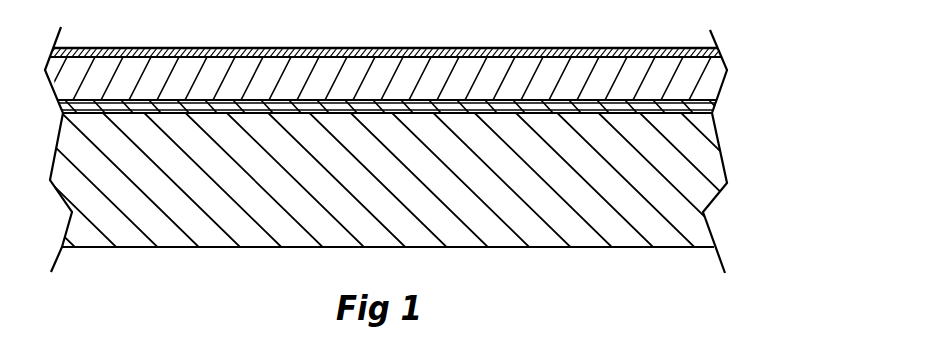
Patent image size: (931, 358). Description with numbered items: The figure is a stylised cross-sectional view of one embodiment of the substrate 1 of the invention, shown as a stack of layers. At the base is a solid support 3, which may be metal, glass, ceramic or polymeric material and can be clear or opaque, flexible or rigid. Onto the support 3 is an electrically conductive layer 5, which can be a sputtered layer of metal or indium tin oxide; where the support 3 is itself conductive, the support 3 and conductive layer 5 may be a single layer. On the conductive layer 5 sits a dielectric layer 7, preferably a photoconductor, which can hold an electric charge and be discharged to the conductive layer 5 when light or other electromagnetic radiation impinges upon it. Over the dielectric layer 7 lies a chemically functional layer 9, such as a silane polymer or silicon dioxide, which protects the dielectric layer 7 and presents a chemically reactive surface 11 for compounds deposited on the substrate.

The substrate 1 is at (207, 259).
The solid support 3 is at (680, 174).
The electrically conductive layer 5 is at (697, 102).
The dielectric layer 7 is at (700, 70).
The chemically functional layer 9 is at (717, 50).
The chemically reactive surface 11 is at (181, 50).